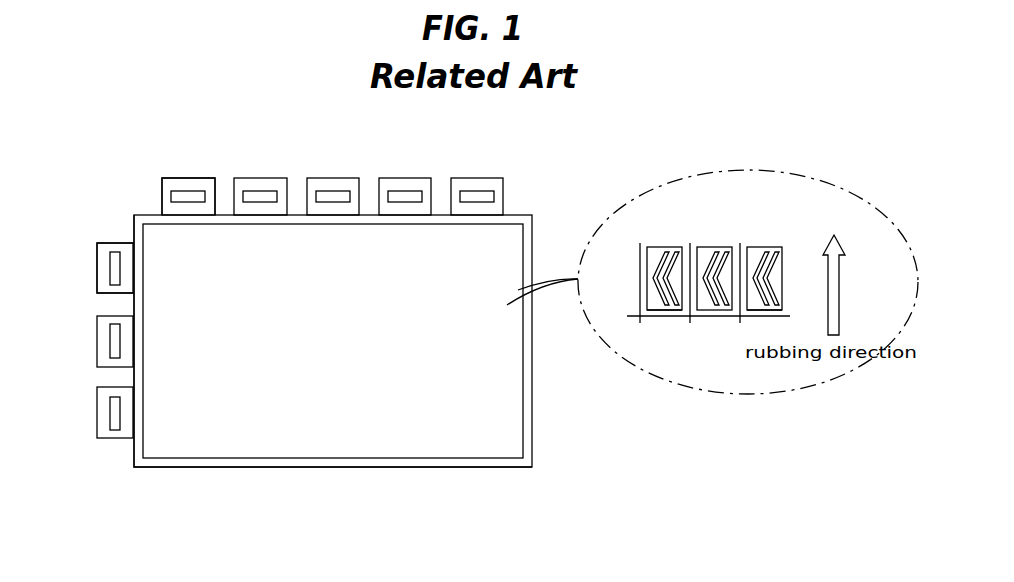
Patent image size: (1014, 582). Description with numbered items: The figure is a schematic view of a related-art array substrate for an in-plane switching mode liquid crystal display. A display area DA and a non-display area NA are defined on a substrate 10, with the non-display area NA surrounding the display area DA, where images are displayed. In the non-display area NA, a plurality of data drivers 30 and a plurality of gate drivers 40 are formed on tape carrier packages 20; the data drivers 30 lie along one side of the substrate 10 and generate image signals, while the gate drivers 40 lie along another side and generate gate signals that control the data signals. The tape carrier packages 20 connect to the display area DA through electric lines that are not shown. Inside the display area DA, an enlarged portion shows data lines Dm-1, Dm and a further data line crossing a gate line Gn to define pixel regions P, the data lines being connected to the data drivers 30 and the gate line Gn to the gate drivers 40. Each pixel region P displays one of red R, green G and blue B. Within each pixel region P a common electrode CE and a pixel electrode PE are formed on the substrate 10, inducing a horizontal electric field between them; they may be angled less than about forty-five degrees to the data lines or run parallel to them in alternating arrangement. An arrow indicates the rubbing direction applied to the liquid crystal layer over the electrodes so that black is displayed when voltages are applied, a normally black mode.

The substrate 10 is at (162, 462).
The tape carrier package 20 is at (163, 200).
The data driver 30 is at (257, 192).
The gate driver 40 is at (110, 272).
The non-display area NA is at (133, 448).
The display area DA is at (227, 453).
The pixel region P is at (668, 247).
The pixel electrode PE is at (764, 252).
The common electrode CE is at (780, 248).
The gate line Gn is at (696, 316).
The data line Dm-1 is at (641, 271).
The data line Dm is at (693, 271).
The red color R is at (664, 324).
The green color G is at (714, 293).
The blue color B is at (764, 324).